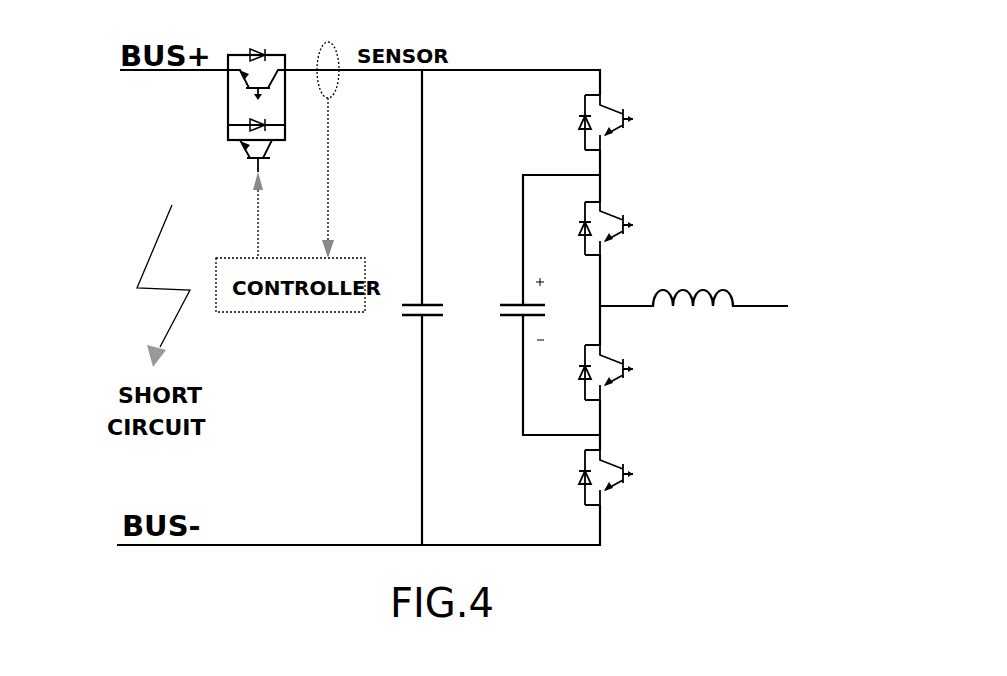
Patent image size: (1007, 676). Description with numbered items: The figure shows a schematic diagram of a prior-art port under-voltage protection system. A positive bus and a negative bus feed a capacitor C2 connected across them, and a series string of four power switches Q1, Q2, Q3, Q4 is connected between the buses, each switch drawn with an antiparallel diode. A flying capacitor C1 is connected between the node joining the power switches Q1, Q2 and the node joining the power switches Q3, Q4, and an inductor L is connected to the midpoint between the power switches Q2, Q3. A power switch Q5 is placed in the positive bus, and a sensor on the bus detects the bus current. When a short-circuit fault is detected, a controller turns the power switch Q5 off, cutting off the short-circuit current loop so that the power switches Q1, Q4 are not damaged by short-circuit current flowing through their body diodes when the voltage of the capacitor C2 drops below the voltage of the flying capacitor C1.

The power switch Q1 is at (617, 131).
The power switch Q2 is at (622, 238).
The power switch Q3 is at (622, 384).
The power switch Q4 is at (617, 489).
The power switch Q5 is at (256, 138).
The flying capacitor C1 is at (539, 305).
The bus capacitor C2 is at (406, 307).
The inductor L is at (694, 319).